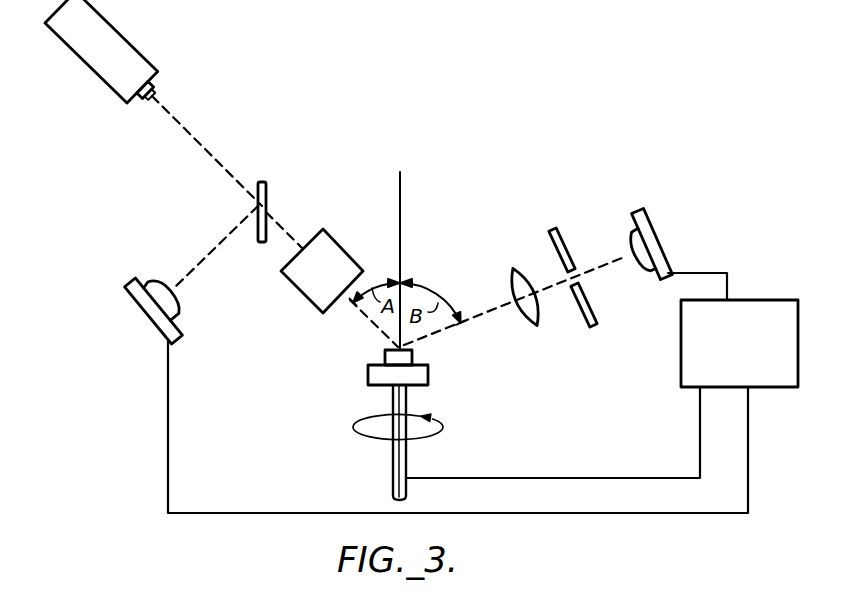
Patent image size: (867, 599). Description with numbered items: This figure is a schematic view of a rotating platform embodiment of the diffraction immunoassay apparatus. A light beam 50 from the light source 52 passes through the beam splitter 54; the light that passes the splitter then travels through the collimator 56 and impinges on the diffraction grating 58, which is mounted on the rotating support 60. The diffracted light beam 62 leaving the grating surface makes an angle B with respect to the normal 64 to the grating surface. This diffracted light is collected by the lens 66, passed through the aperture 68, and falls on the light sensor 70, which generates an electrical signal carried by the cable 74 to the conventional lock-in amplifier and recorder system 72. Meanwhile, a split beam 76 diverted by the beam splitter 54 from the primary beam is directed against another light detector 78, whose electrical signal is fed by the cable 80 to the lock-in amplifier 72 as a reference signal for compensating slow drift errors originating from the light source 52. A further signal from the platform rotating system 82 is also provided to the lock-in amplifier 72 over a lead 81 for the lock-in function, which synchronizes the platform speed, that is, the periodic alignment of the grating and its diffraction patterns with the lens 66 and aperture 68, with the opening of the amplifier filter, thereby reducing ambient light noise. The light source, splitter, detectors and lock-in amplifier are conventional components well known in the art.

The light beam 50 is at (184, 128).
The light source 52 is at (118, 30).
The beam splitter 54 is at (267, 190).
The collimator 56 is at (324, 228).
The diffraction grating 58 is at (412, 358).
The rotating support 60 is at (428, 376).
The diffracted light beam 62 is at (493, 308).
The normal 64 is at (401, 188).
The lens 66 is at (514, 266).
The aperture 68 is at (553, 228).
The light sensor 70 is at (634, 212).
The lock-in amplifier and recorder system 72 is at (748, 300).
The cable 74 is at (702, 273).
The split beam 76 is at (198, 265).
The light detector 78 is at (182, 328).
The cable 80 is at (170, 410).
The stage control lead 81 is at (700, 431).
The platform rotating system 82 is at (393, 455).